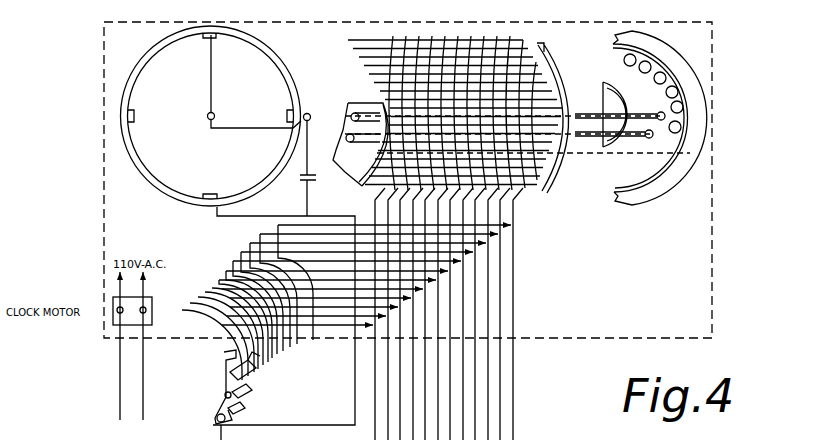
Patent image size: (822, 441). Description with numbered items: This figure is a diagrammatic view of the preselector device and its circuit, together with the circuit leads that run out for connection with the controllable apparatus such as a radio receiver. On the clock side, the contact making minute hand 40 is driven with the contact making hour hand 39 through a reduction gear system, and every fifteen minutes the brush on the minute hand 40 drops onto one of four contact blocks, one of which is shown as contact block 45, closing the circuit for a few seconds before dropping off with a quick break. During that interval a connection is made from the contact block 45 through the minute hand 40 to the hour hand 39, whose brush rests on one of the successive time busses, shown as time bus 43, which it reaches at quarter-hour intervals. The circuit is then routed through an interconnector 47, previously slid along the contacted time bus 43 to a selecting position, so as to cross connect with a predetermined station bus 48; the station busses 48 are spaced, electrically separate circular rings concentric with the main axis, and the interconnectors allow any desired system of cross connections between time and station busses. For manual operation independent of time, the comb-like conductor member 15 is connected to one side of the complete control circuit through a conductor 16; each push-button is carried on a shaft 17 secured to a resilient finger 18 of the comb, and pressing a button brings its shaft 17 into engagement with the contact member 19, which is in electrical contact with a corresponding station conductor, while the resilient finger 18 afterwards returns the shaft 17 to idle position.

The comb-like conductor member 15 is at (228, 384).
The conductor 16 is at (319, 216).
The shaft 17 is at (467, 224).
The finger 18 is at (233, 373).
The contact member 19 is at (247, 397).
The contact making hour hand 39 is at (381, 86).
The contact making minute hand 40 is at (214, 78).
The time bus 43 is at (494, 96).
The contact block 45 is at (205, 38).
The interconnector 47 is at (410, 80).
The station bus 48 is at (349, 43).